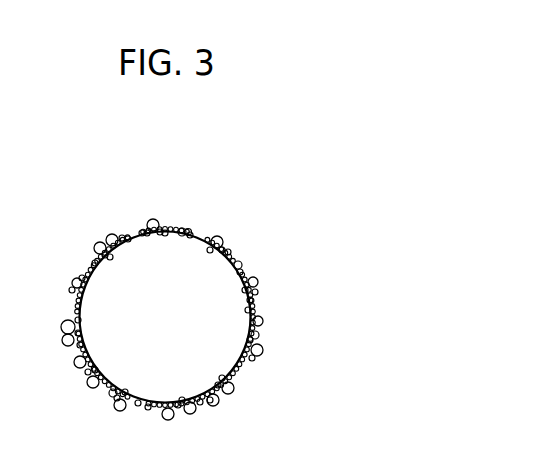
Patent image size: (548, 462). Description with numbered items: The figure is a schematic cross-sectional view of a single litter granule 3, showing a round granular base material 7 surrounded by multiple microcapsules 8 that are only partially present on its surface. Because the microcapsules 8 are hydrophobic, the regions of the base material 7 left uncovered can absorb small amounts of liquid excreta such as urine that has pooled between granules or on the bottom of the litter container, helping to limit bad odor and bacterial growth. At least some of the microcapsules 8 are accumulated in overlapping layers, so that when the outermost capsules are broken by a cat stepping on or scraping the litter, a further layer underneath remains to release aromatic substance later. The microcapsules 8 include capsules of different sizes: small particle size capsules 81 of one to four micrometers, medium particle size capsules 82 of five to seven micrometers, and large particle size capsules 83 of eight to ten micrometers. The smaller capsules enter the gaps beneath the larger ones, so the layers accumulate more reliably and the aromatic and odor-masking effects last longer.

The active material particle 3 is at (350, 180).
The granular base material 7 is at (188, 260).
The microcapsules 8 is at (397, 227).
The small particle size capsules 81 is at (257, 310).
The medium particle size capsules 82 is at (260, 293).
The large particle size capsules 83 is at (257, 282).